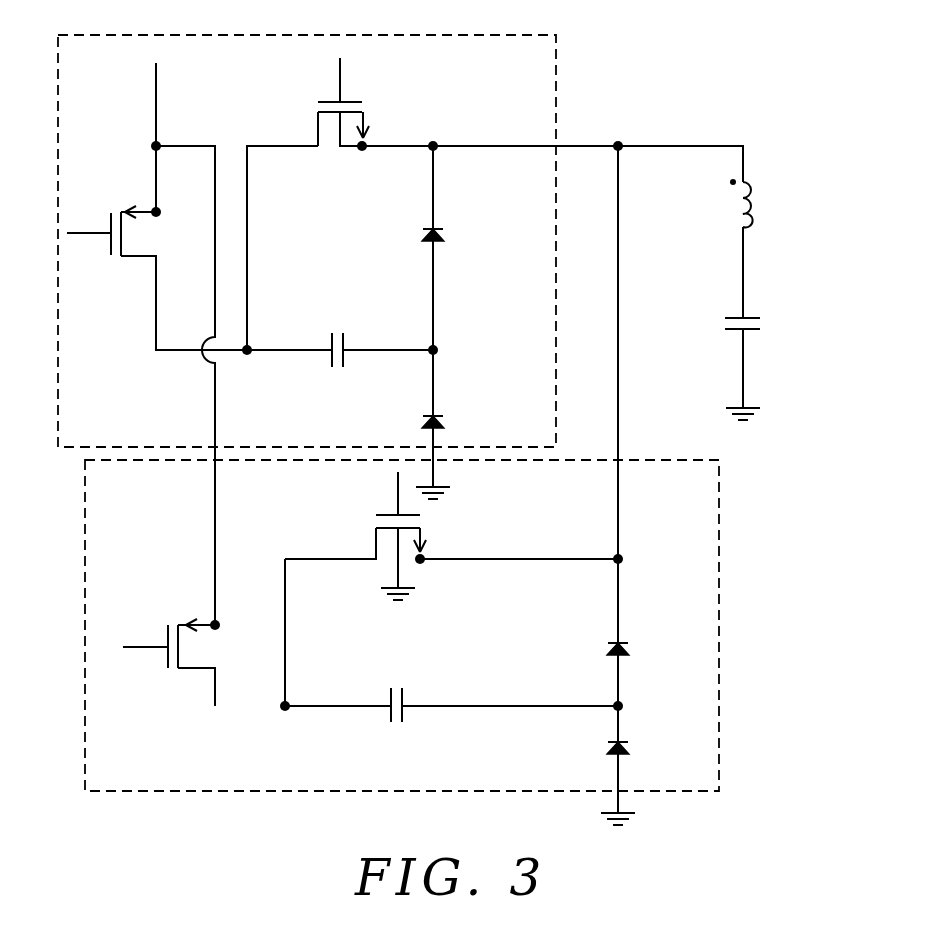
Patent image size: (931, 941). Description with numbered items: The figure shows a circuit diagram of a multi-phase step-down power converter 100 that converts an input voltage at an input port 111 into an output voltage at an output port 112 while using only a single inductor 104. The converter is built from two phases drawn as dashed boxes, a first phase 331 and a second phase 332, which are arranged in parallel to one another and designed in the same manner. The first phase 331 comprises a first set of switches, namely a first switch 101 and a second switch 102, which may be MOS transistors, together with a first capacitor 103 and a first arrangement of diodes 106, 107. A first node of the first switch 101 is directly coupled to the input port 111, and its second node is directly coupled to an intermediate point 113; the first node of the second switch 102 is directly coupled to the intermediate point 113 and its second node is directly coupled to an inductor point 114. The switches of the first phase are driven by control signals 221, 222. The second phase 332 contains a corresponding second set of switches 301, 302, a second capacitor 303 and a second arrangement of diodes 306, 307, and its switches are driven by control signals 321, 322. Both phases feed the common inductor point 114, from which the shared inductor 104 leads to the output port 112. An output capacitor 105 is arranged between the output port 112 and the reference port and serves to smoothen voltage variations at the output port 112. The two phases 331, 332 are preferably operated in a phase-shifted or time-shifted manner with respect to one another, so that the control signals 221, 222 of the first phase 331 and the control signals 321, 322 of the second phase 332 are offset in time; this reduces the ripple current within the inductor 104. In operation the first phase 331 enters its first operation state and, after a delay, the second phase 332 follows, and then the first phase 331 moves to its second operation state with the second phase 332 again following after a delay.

The power converter 100 is at (663, 64).
The first switch 101 is at (150, 243).
The second switch 102 is at (330, 128).
The first capacitor 103 is at (327, 344).
The inductor 104 is at (738, 207).
The output capacitor 105 is at (748, 318).
The diode 106 is at (440, 229).
The diode 107 is at (438, 417).
The input port 111 is at (157, 70).
The output port 112 is at (742, 258).
The intermediate point 113 is at (247, 357).
The inductor point 114 is at (619, 140).
The control signal 221 is at (83, 238).
The control signal 222 is at (341, 70).
The switch 301 is at (210, 661).
The switch 302 is at (383, 566).
The second capacitor 303 is at (387, 700).
The diode 306 is at (623, 643).
The diode 307 is at (623, 742).
The control signal 321 is at (143, 650).
The control signal 322 is at (397, 488).
The first phase 331 is at (485, 35).
The second phase 332 is at (720, 510).